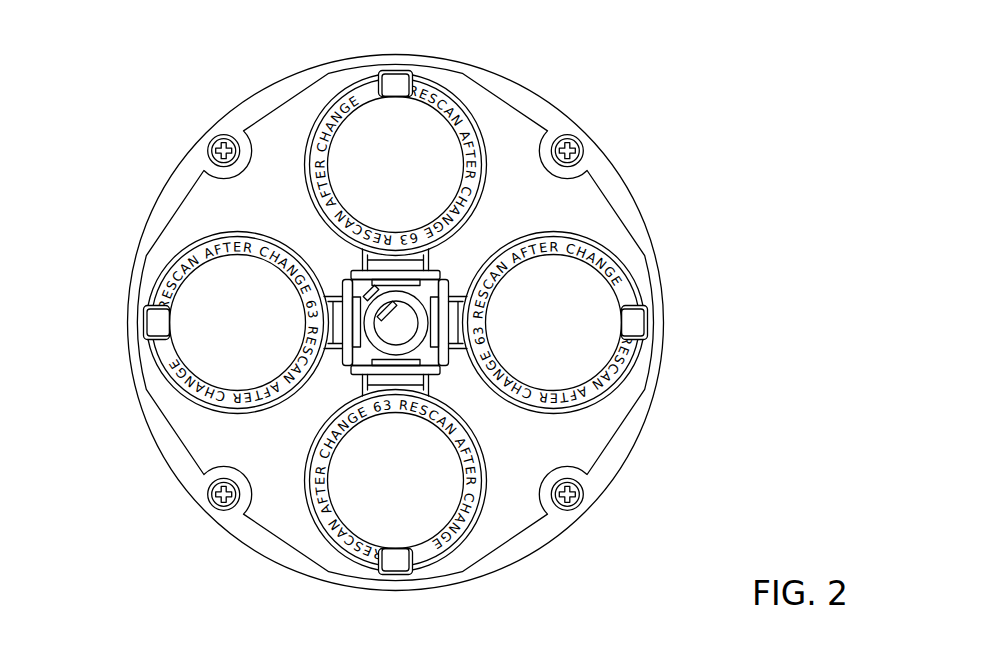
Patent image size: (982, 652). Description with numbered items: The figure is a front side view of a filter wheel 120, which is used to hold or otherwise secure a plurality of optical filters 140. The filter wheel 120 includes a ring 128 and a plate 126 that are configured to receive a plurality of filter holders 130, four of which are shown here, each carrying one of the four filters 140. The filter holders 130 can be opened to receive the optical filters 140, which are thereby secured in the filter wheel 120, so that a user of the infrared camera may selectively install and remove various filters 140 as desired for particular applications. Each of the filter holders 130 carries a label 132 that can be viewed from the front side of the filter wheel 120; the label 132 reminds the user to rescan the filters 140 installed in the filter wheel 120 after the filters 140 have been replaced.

The filter wheel 120 is at (136, 151).
The plate 126 is at (582, 453).
The ring 128 is at (642, 407).
The filter holder 130 is at (406, 72).
The label 132 is at (333, 95).
The filter 140 is at (412, 490).